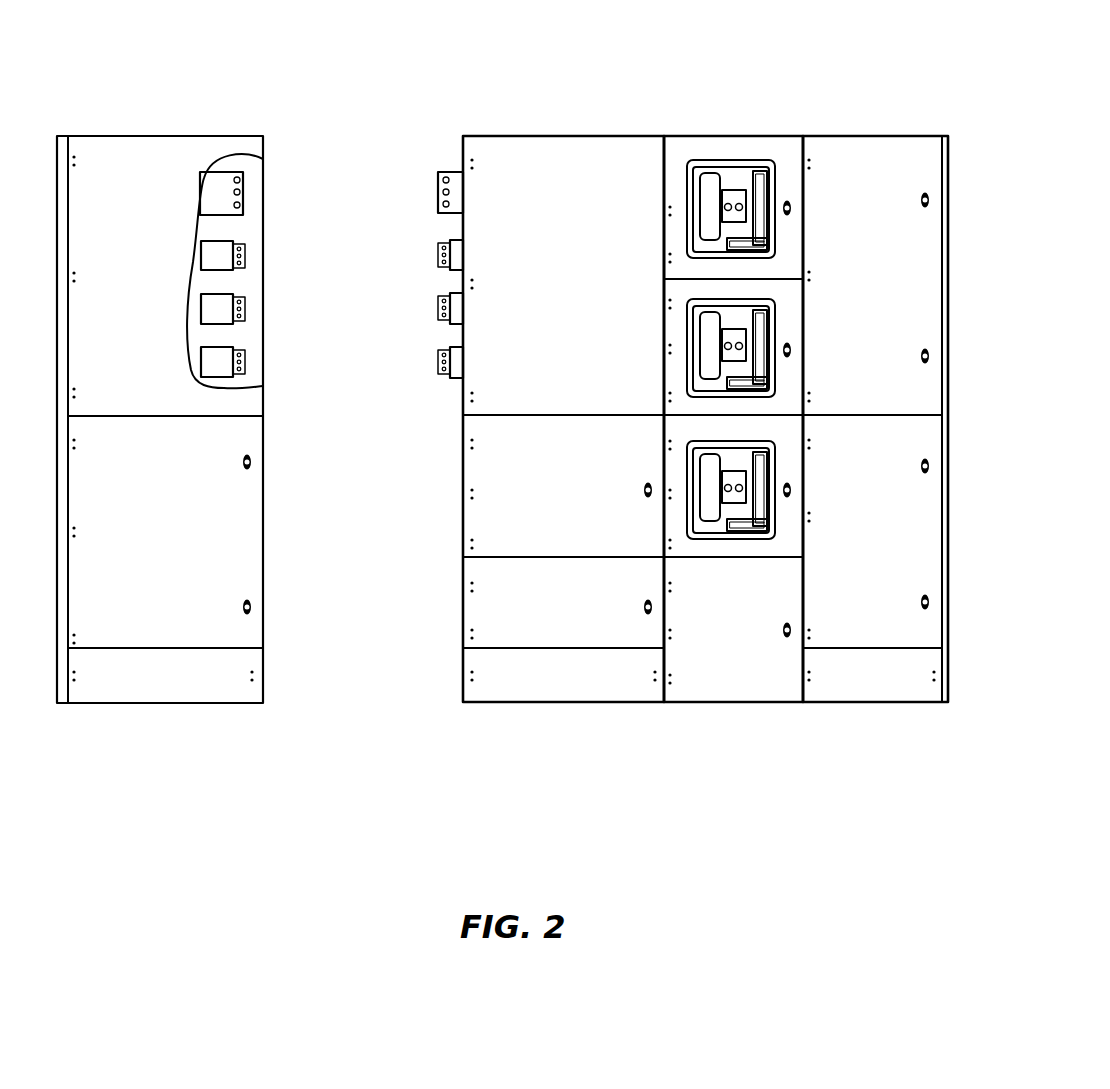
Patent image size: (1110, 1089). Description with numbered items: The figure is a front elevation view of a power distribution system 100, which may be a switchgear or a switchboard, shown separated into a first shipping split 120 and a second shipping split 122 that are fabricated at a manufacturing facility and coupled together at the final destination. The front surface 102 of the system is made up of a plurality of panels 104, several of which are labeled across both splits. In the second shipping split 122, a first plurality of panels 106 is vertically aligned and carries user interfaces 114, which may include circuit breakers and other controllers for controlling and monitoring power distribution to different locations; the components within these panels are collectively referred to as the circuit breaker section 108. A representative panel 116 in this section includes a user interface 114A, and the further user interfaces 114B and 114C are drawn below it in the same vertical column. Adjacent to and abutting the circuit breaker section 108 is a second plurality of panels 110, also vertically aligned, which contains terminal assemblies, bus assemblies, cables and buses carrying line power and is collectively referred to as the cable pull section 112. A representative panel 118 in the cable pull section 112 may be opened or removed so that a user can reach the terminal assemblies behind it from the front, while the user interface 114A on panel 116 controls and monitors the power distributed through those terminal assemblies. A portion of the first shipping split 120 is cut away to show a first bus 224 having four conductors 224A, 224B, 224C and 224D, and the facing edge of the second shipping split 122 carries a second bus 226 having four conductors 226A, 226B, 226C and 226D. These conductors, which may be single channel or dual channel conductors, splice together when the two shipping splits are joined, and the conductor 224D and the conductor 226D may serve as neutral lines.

The power distribution system 100 is at (817, 48).
The front surface 102 is at (148, 170).
The panels 104 is at (156, 385).
The first plurality of panels 106 is at (710, 124).
The circuit breaker section 108 is at (729, 714).
The second plurality of panels 110 is at (883, 407).
The cable pull section 112 is at (876, 660).
The user interfaces 114 is at (725, 146).
The user interface 114A is at (775, 183).
The second electrical outlet 114B is at (794, 345).
The third electrical outlet 114C is at (776, 517).
The panel 116 is at (790, 302).
The panel 118 is at (900, 150).
The first shipping split 120 is at (209, 385).
The second shipping split 122 is at (594, 126).
The first bus 224 is at (257, 287).
The conductor 224A is at (242, 252).
The conductor 224B is at (242, 306).
The conductor 224C is at (242, 358).
The conductor 224D is at (238, 192).
The second bus 226 is at (411, 293).
The conductor 226A is at (440, 250).
The conductor 226B is at (440, 304).
The conductor 226C is at (440, 357).
The conductor 226D is at (440, 192).